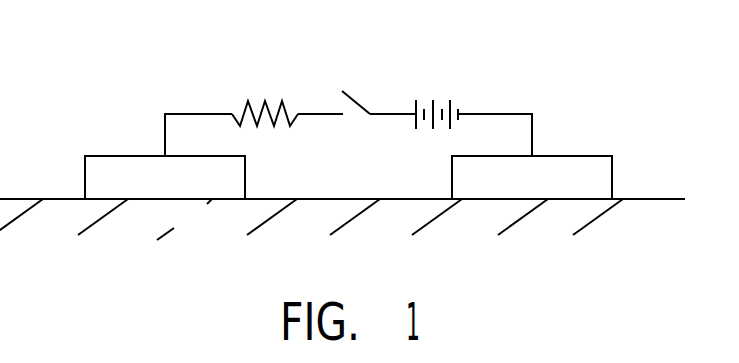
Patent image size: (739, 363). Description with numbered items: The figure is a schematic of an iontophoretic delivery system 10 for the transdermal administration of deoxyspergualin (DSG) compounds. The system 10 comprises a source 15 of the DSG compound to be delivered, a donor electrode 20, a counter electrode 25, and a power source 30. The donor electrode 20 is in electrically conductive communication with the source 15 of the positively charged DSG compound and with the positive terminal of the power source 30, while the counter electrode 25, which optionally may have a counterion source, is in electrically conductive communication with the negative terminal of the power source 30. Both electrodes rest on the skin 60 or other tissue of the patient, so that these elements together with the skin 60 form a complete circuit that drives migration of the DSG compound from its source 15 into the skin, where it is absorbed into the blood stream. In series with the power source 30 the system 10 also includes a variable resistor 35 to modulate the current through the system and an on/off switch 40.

The iontophoretic delivery system 10 is at (601, 87).
The source of the DSG compound 15 is at (95, 171).
The donor electrode 20 is at (124, 156).
The counter electrode 25 is at (567, 156).
The power source 30 is at (435, 105).
The variable resistor 35 is at (251, 104).
The on/off switch 40 is at (352, 103).
The skin 60 is at (211, 237).